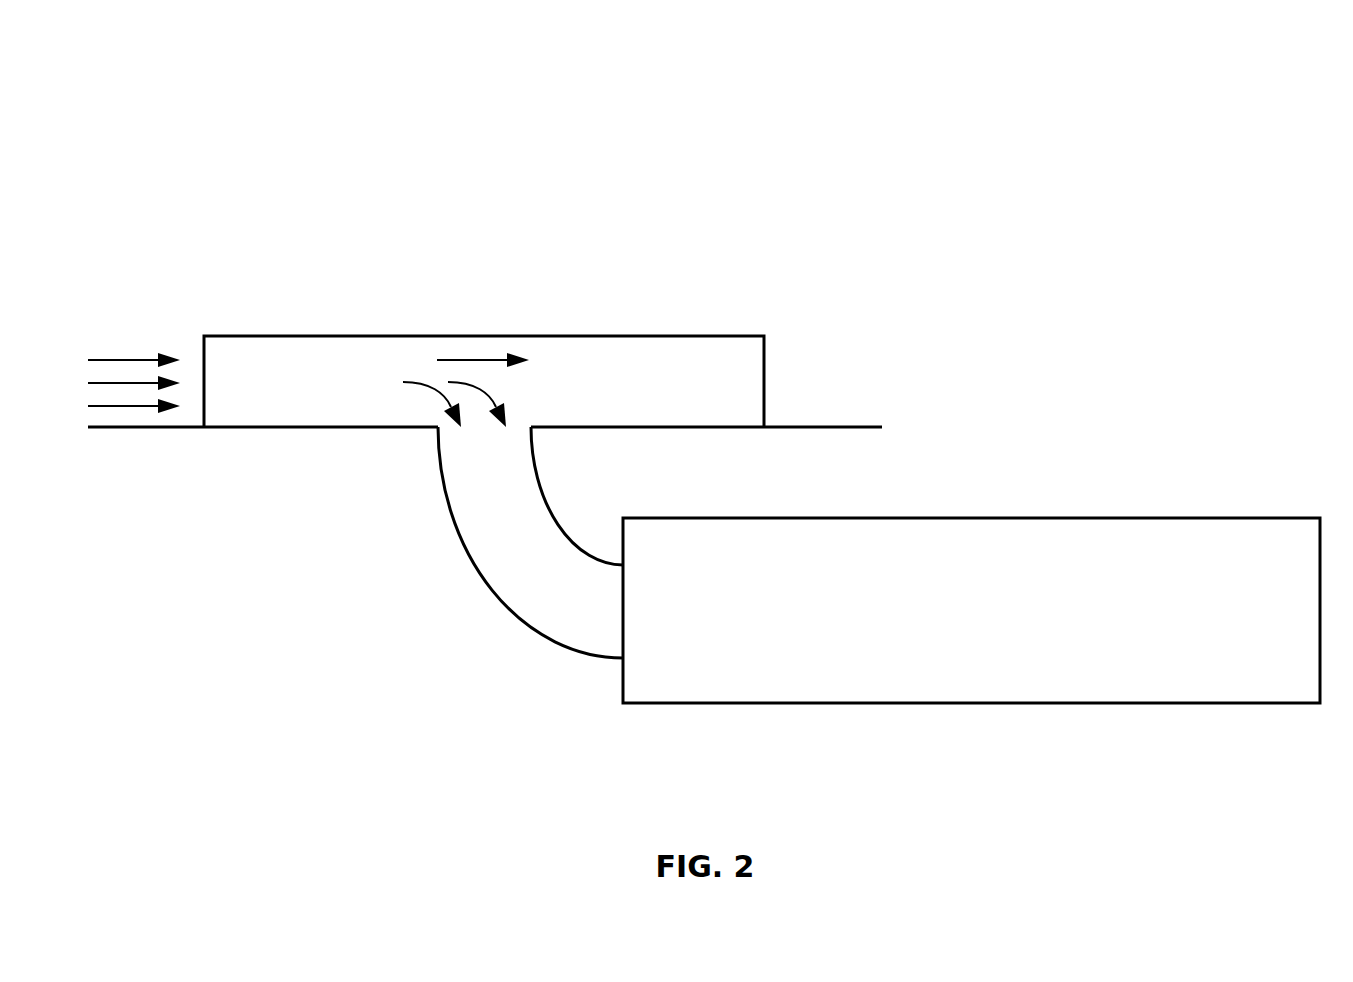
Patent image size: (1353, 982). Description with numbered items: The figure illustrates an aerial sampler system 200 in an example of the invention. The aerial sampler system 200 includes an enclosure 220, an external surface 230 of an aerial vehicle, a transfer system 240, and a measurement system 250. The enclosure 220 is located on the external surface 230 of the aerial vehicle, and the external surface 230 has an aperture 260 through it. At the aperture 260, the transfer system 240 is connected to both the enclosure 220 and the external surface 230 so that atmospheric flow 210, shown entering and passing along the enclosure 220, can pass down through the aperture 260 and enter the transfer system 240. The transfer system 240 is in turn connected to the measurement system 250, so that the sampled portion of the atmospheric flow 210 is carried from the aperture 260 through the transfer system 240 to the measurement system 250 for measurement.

The aerial sampler system 200 is at (137, 130).
The atmospheric flow 210 is at (100, 360).
The enclosure 220 is at (703, 335).
The external surface 230 is at (785, 428).
The transfer system 240 is at (511, 612).
The measurement system 250 is at (946, 645).
The aperture 260 is at (473, 428).